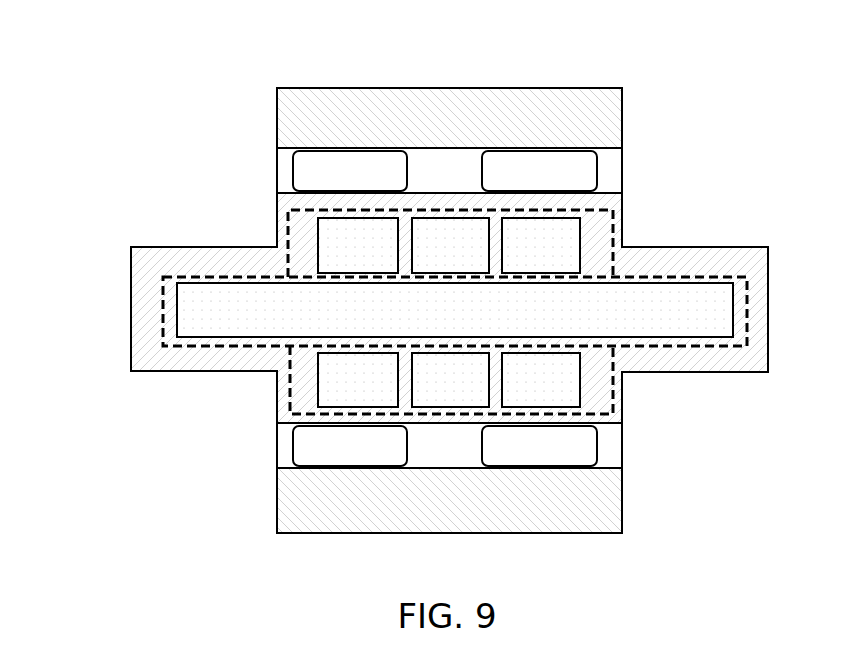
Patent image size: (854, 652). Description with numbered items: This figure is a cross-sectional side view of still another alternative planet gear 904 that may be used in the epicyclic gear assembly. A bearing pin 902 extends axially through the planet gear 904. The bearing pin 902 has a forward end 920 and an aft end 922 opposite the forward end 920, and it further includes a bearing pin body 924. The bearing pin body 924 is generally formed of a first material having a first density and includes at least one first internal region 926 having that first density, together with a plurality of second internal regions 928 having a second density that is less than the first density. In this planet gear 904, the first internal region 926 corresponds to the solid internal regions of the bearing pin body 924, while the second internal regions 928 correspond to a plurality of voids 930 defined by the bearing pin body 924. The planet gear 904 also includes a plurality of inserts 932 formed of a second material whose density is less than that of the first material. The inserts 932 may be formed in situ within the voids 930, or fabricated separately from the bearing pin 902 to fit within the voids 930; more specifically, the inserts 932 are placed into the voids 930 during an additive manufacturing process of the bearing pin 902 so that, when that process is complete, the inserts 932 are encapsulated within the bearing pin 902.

The bearing pin 902 is at (107, 417).
The planet gear 904 is at (198, 83).
The forward end 920 is at (152, 260).
The aft end 922 is at (764, 246).
The bearing pin body 924 is at (657, 262).
The first internal region 926 is at (263, 260).
The second internal region 928 is at (613, 210).
The voids 930 is at (357, 232).
The inserts 932 is at (333, 228).